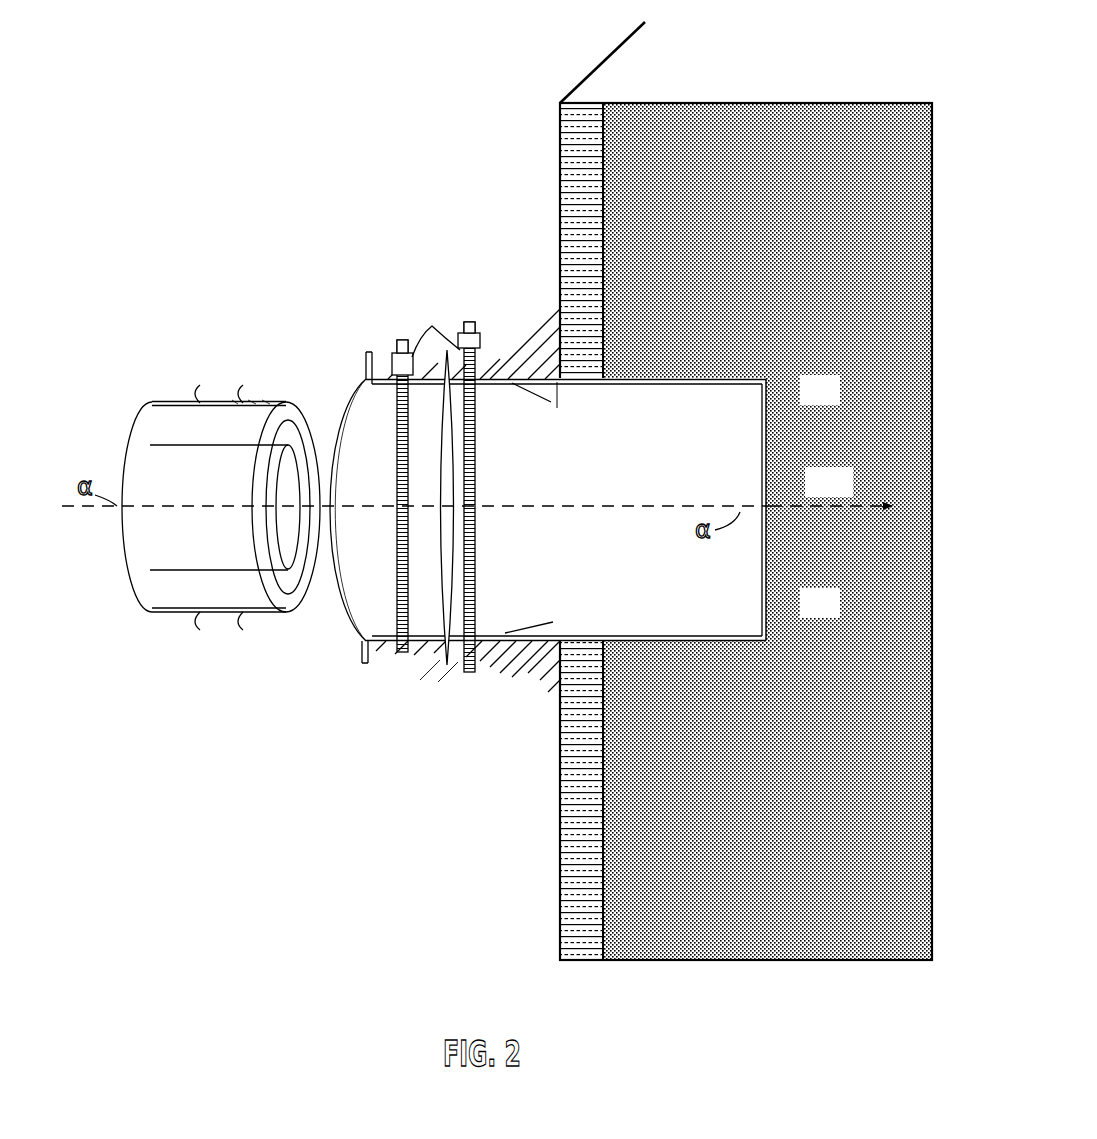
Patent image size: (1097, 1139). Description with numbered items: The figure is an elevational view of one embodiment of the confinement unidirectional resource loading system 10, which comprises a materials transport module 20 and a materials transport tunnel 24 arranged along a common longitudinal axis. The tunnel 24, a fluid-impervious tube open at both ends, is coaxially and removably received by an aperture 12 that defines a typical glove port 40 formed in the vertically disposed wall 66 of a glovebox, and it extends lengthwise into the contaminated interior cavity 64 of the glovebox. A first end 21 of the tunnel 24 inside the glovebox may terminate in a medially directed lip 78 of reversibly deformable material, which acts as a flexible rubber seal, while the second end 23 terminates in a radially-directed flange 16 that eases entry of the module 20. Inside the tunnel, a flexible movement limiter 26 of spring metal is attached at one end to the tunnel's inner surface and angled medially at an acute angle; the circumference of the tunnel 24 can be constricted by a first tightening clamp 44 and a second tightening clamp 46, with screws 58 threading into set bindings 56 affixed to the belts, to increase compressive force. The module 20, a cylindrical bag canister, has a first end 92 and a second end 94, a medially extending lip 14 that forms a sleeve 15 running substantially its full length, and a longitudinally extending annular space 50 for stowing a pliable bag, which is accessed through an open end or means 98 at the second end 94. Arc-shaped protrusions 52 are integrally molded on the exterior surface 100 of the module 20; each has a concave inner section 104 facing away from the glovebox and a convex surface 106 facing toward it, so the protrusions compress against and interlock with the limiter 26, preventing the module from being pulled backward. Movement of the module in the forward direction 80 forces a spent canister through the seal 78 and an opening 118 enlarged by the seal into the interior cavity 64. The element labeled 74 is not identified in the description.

The confinement unidirectional resource loading system 10 is at (294, 709).
The aperture 12 is at (318, 560).
The medially extending lip 14 is at (298, 432).
The sleeve 15 is at (220, 445).
The radially-directed flange 16 is at (366, 358).
The materials transport module 20 is at (191, 468).
The first end of the materials transport tunnel 21 is at (591, 495).
The second end of the materials transport tunnel 23 is at (347, 398).
The materials transport tunnel 24 is at (383, 636).
The flexible movement limiter 26 is at (515, 388).
The glove port 40 is at (527, 330).
The first tightening clamp 44 is at (395, 470).
The second tightening clamp 46 is at (478, 452).
The annular space 50 is at (158, 433).
The radially extending protrusions 52 is at (195, 385).
The set bindings 56 is at (432, 328).
The screws 58 is at (398, 342).
The interior cavity 64 is at (715, 491).
The vertically disposed wall 66 is at (572, 245).
The adhesive 74 is at (548, 655).
The medially directed lip 78 is at (767, 410).
The forward direction 80 is at (565, 506).
The first end of the materials transport module 92 is at (253, 523).
The second end of the materials transport module 94 is at (135, 570).
The means for accessing the annular space 98 is at (148, 605).
The exterior surface 100 is at (267, 402).
The concave inner section 104 is at (235, 398).
The convex surface 106 is at (252, 400).
The opening 118 is at (767, 498).